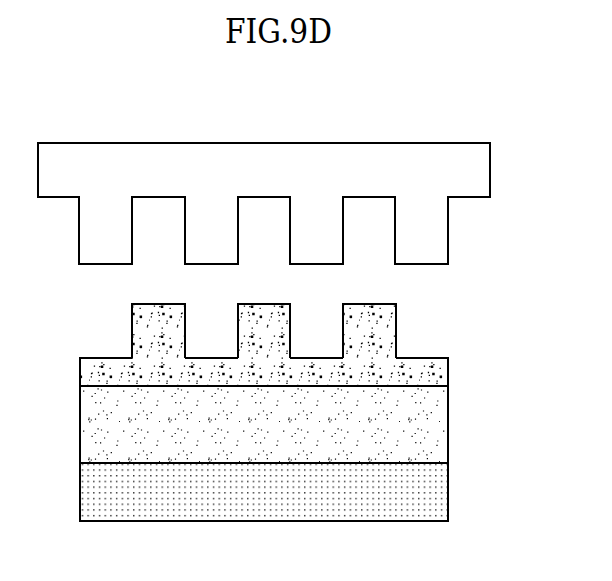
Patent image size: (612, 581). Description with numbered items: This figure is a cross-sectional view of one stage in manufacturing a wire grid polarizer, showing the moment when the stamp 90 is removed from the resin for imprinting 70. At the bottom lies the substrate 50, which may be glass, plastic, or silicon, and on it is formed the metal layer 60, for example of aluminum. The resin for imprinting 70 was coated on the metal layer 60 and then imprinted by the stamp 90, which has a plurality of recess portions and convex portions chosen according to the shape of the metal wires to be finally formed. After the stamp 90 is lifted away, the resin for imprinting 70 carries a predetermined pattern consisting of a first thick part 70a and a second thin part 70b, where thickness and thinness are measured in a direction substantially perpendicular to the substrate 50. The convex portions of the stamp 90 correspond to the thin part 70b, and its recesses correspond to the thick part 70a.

The stamp 90 is at (472, 171).
The resin for imprinting 70 is at (319, 345).
The thick part 70a is at (373, 331).
The thin part 70b is at (427, 372).
The metal layer 60 is at (428, 424).
The substrate 50 is at (428, 490).